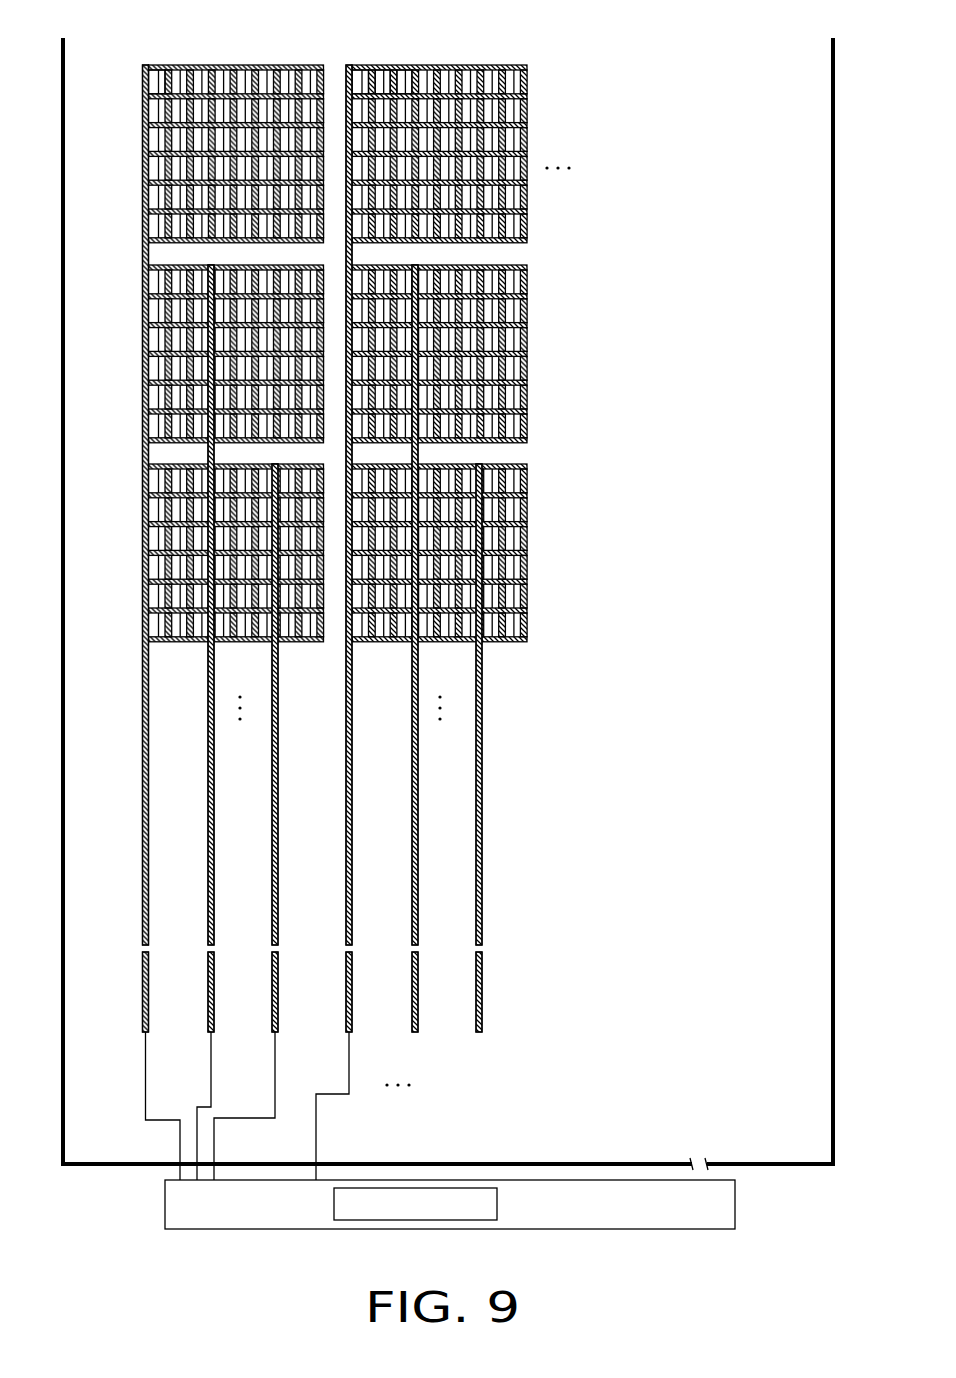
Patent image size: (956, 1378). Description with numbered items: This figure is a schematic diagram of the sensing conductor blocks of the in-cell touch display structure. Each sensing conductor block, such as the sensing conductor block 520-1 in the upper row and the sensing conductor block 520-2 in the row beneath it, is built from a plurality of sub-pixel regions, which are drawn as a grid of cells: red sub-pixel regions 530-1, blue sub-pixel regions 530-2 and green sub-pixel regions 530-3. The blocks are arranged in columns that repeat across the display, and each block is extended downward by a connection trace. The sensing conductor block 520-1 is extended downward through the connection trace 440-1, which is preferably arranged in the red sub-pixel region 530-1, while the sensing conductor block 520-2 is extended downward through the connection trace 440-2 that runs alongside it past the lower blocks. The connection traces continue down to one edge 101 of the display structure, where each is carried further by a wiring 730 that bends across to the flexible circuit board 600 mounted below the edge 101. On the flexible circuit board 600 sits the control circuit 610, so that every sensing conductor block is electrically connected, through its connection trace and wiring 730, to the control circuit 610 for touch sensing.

The edge 101 is at (110, 1167).
The connection trace 440-1 is at (143, 230).
The connection trace 440-2 is at (210, 675).
The sensing conductor block 520-1 is at (227, 155).
The sensing conductor block 520-2 is at (232, 354).
The red sub-pixel region 530-1 is at (150, 87).
The blue sub-pixel region 530-2 is at (387, 85).
The green sub-pixel region 530-3 is at (405, 83).
The flexible circuit board 600 is at (735, 1205).
The control circuit 610 is at (497, 1205).
The wiring 730 is at (145, 1082).